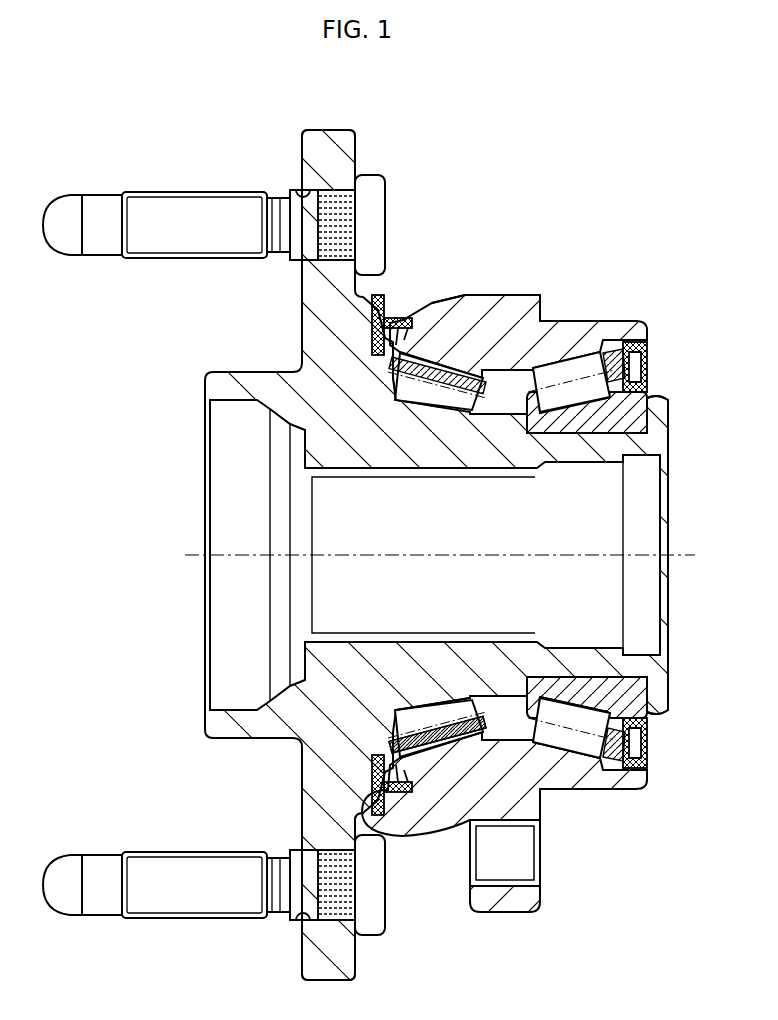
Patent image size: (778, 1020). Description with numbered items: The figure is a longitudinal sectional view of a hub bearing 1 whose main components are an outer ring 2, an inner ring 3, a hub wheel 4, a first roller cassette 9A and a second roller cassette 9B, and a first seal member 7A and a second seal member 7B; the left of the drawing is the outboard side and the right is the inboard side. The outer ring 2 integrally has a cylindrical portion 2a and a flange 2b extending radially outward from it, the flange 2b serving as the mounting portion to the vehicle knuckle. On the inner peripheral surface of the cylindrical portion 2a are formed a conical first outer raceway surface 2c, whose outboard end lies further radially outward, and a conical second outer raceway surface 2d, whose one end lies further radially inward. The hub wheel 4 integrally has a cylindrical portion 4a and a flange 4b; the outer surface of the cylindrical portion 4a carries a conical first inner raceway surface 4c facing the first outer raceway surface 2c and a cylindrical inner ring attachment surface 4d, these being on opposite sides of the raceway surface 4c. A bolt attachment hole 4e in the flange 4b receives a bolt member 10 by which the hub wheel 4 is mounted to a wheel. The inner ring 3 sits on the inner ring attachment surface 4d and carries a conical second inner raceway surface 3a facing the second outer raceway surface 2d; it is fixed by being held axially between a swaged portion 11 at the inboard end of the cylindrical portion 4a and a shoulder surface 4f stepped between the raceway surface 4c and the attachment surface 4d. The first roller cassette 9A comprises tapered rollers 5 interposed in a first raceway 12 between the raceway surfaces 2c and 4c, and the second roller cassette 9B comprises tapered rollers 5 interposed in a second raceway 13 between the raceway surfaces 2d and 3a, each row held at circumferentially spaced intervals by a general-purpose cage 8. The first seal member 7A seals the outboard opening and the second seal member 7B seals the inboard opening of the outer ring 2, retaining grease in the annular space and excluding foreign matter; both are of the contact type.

The hub bearing 1 is at (656, 212).
The outer ring 2 is at (547, 290).
The cylindrical portion 2a is at (542, 328).
The flange 2b is at (502, 906).
The first outer raceway surface 2c is at (435, 752).
The second outer raceway surface 2d is at (573, 757).
The inner ring 3 is at (626, 726).
The second inner raceway surface 3a is at (598, 692).
The hub wheel 4 is at (292, 328).
The cylindrical portion 4a is at (492, 454).
The flange 4b is at (330, 150).
The first inner raceway surface 4c is at (440, 704).
The inner ring attachment surface 4d is at (590, 438).
The bolt attachment hole 4e is at (300, 186).
The shoulder surface 4f is at (540, 682).
The tapered roller 5 is at (593, 360).
The first seal member 7A is at (393, 300).
The second seal member 7B is at (652, 357).
The general-purpose cage 8 is at (447, 354).
The first roller cassette 9A is at (407, 404).
The second roller cassette 9B is at (661, 452).
The bolt member 10 is at (190, 210).
The swaged portion 11 is at (666, 416).
The first raceway 12 is at (440, 410).
The second raceway 13 is at (559, 442).